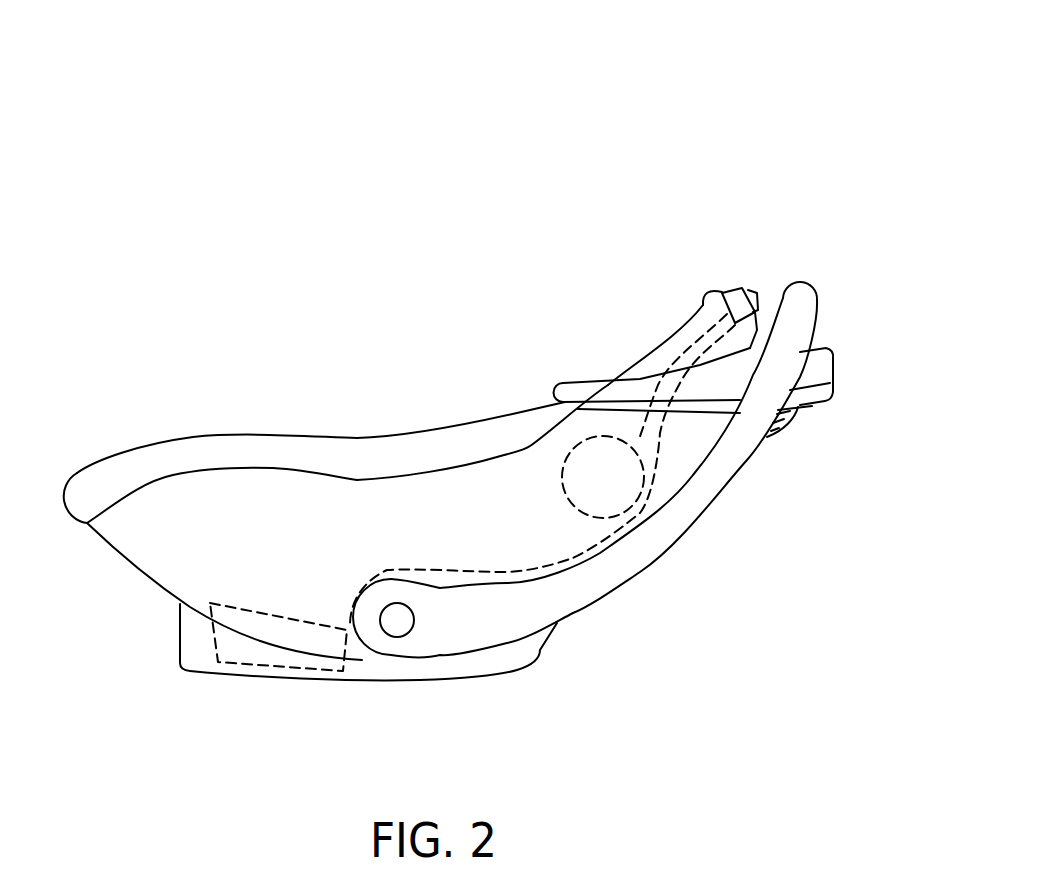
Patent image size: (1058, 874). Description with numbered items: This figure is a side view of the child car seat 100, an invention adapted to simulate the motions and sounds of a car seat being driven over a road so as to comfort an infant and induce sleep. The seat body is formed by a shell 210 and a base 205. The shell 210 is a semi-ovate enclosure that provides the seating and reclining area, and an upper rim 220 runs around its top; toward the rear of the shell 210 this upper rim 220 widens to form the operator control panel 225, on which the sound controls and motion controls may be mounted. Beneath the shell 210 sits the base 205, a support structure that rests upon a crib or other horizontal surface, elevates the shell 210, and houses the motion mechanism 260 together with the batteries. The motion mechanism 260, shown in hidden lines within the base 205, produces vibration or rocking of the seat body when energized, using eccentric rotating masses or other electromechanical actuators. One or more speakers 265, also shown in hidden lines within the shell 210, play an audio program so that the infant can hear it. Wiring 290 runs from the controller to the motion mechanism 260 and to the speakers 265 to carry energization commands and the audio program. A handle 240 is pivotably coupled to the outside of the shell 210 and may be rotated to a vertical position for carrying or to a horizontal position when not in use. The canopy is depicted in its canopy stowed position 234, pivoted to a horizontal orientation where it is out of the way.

The child car seat 100 is at (732, 118).
The base 205 is at (507, 660).
The shell 210 is at (523, 520).
The upper rim 220 is at (116, 466).
The operator control panel 225 is at (778, 295).
The canopy stowed position 234 is at (850, 437).
The handle 240 is at (790, 337).
The motion mechanism 260 is at (258, 655).
The speakers 265 is at (615, 485).
The wiring 290 is at (672, 363).